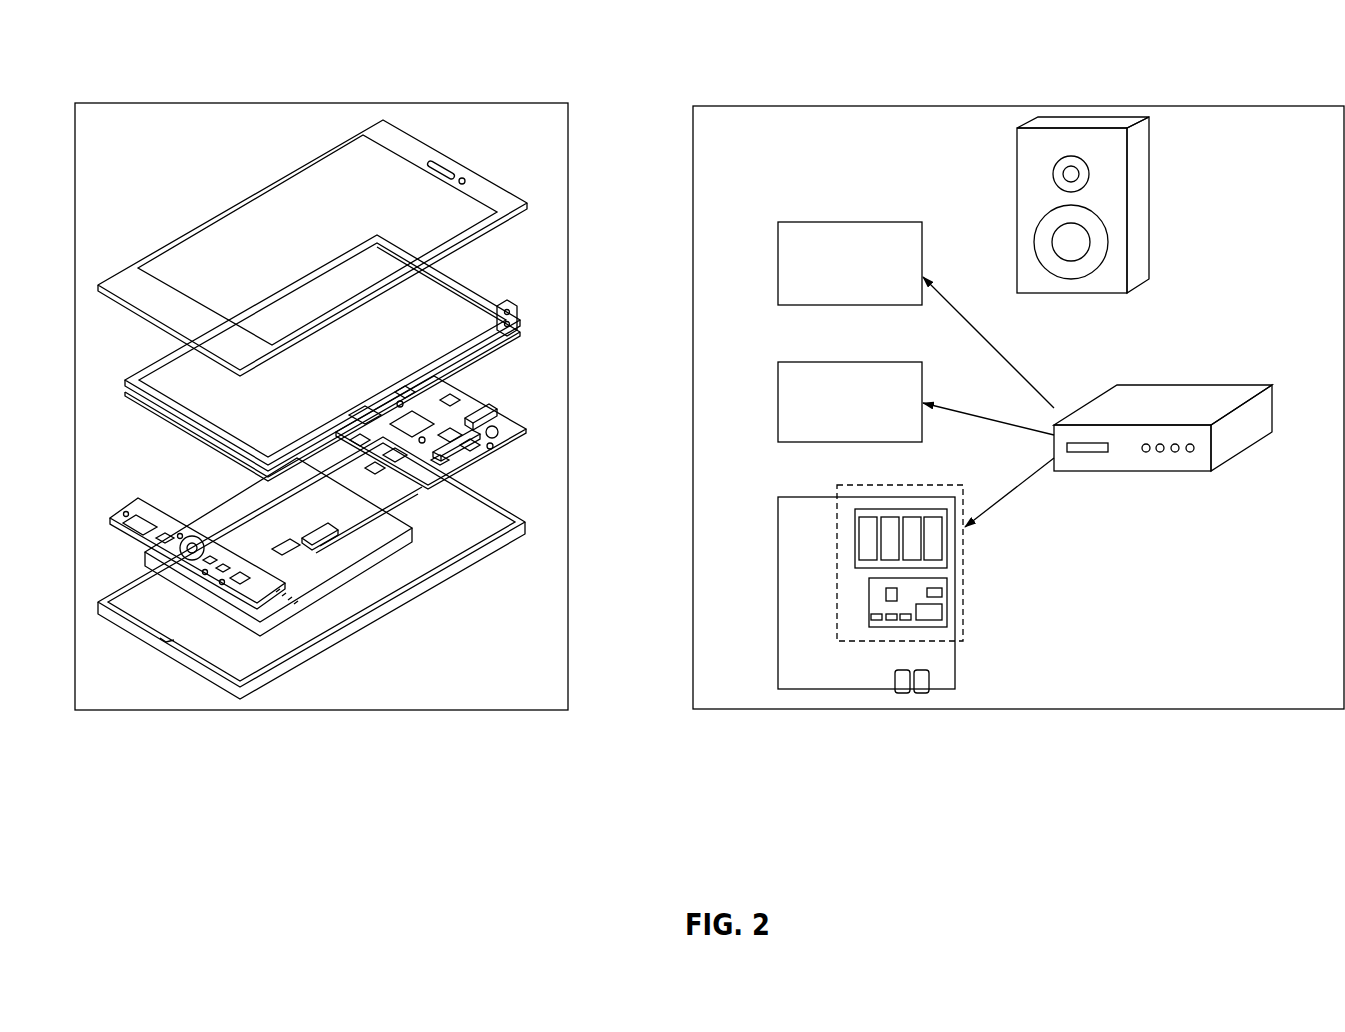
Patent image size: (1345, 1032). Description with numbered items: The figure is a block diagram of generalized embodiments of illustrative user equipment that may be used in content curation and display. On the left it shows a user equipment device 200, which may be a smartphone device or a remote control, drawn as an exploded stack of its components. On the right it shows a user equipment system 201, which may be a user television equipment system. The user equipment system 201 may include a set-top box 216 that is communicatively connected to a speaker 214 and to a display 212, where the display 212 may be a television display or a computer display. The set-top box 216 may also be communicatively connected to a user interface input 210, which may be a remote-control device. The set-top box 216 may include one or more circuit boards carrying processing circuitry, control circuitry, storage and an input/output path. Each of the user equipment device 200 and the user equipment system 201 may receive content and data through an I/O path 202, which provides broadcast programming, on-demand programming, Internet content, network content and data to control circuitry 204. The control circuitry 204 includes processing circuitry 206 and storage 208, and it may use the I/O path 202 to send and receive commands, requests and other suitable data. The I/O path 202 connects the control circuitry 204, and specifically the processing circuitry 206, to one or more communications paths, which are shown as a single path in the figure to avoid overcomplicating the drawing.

The user equipment device 200 is at (170, 50).
The user equipment system 201 is at (1220, 64).
The I/O path 202 is at (180, 556).
The control circuitry 204 is at (833, 608).
The processing circuitry 206 is at (865, 587).
The storage 208 is at (853, 535).
The user interface input 210 is at (778, 263).
The display 212 is at (778, 363).
The speaker 214 is at (1017, 208).
The set-top box 216 is at (1155, 382).